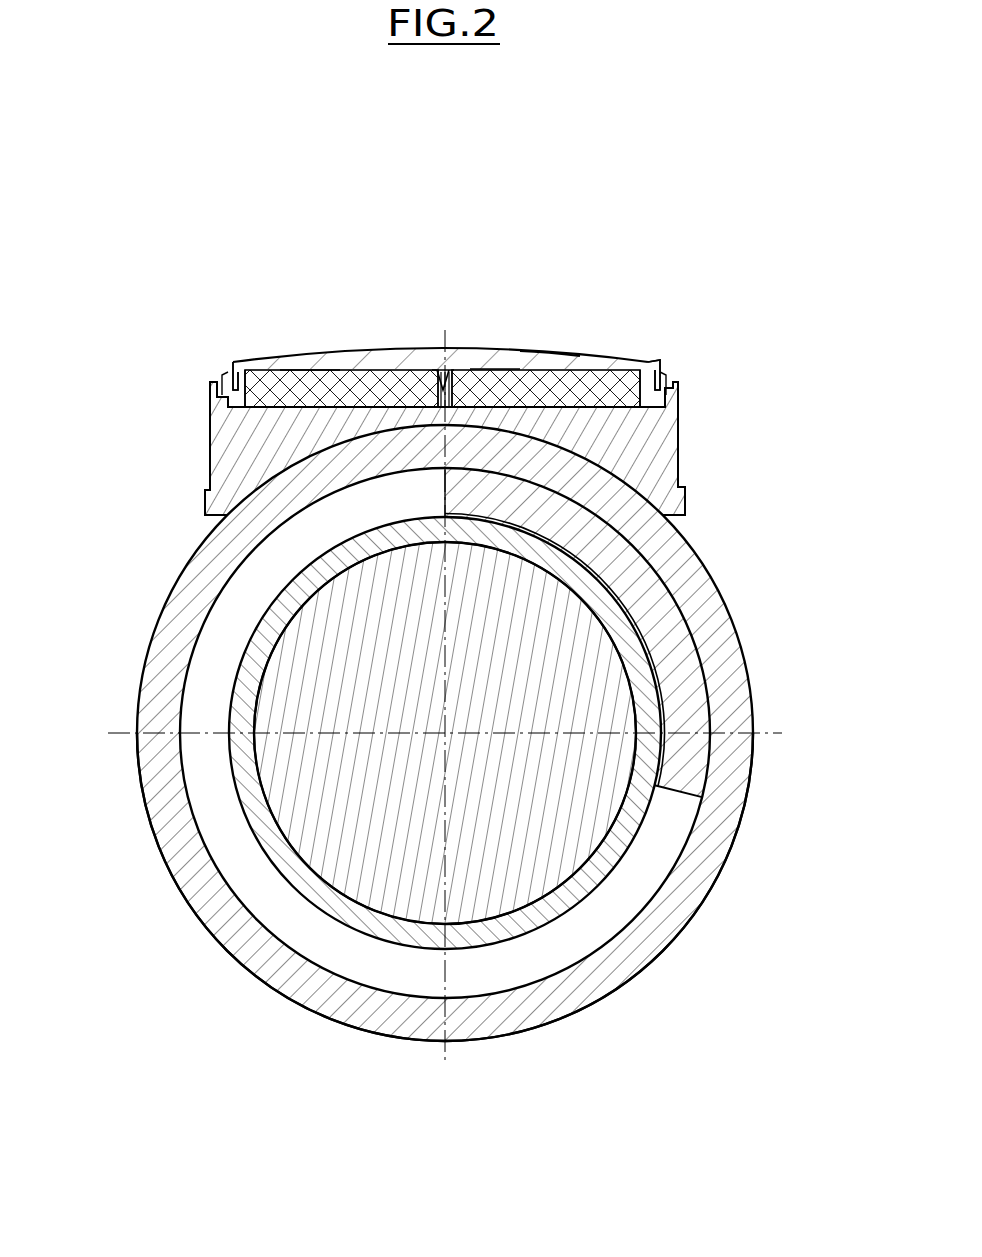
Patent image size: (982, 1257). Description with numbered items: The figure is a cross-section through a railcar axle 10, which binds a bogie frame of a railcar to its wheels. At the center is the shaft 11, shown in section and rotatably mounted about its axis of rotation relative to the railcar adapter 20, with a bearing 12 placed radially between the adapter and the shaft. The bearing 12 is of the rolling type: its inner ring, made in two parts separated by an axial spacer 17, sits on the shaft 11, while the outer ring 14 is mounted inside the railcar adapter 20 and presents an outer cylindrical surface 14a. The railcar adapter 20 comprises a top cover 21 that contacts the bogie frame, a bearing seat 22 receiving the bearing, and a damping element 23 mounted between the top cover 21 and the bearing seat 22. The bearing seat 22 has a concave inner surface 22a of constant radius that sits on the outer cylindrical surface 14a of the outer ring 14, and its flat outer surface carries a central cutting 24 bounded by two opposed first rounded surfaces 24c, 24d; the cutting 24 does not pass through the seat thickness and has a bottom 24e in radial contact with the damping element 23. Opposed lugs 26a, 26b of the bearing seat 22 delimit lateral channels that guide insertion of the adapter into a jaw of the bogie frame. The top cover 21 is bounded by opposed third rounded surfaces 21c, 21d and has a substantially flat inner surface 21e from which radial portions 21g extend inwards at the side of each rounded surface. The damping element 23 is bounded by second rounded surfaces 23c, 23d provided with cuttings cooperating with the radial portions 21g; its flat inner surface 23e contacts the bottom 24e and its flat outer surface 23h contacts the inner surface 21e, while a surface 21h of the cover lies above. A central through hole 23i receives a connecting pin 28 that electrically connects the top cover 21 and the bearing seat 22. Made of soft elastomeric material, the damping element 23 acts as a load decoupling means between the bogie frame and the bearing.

The railcar axle 10 is at (295, 1039).
The shaft 11 is at (300, 806).
The bearing 12 is at (460, 1057).
The outer ring 14 is at (527, 1015).
The outer cylindrical surface 14a is at (587, 1007).
The axial spacer 17 is at (612, 853).
The railcar adapter 20 is at (769, 447).
The top cover 21 is at (390, 361).
The third rounded surface 21c is at (232, 366).
The third rounded surface 21d is at (658, 368).
The inner surface 21e is at (493, 384).
The radial portion 21g is at (227, 380).
The top surface of cover shell 21h is at (548, 352).
The bearing seat 22 is at (247, 445).
The inner surface 22a is at (583, 460).
The damping element 23 is at (580, 384).
The second rounded surface 23c is at (262, 369).
The second rounded surface 23d is at (640, 369).
The inner surface 23e is at (350, 421).
The outer surface 23h is at (313, 370).
The through hole 23i is at (437, 371).
The central cutting 24 is at (652, 406).
The first rounded surface 24c is at (219, 380).
The first rounded surface 24d is at (680, 388).
The bottom 24e is at (221, 400).
The lug 26a is at (670, 470).
The lug 26b is at (220, 470).
The connecting pin 28 is at (453, 371).